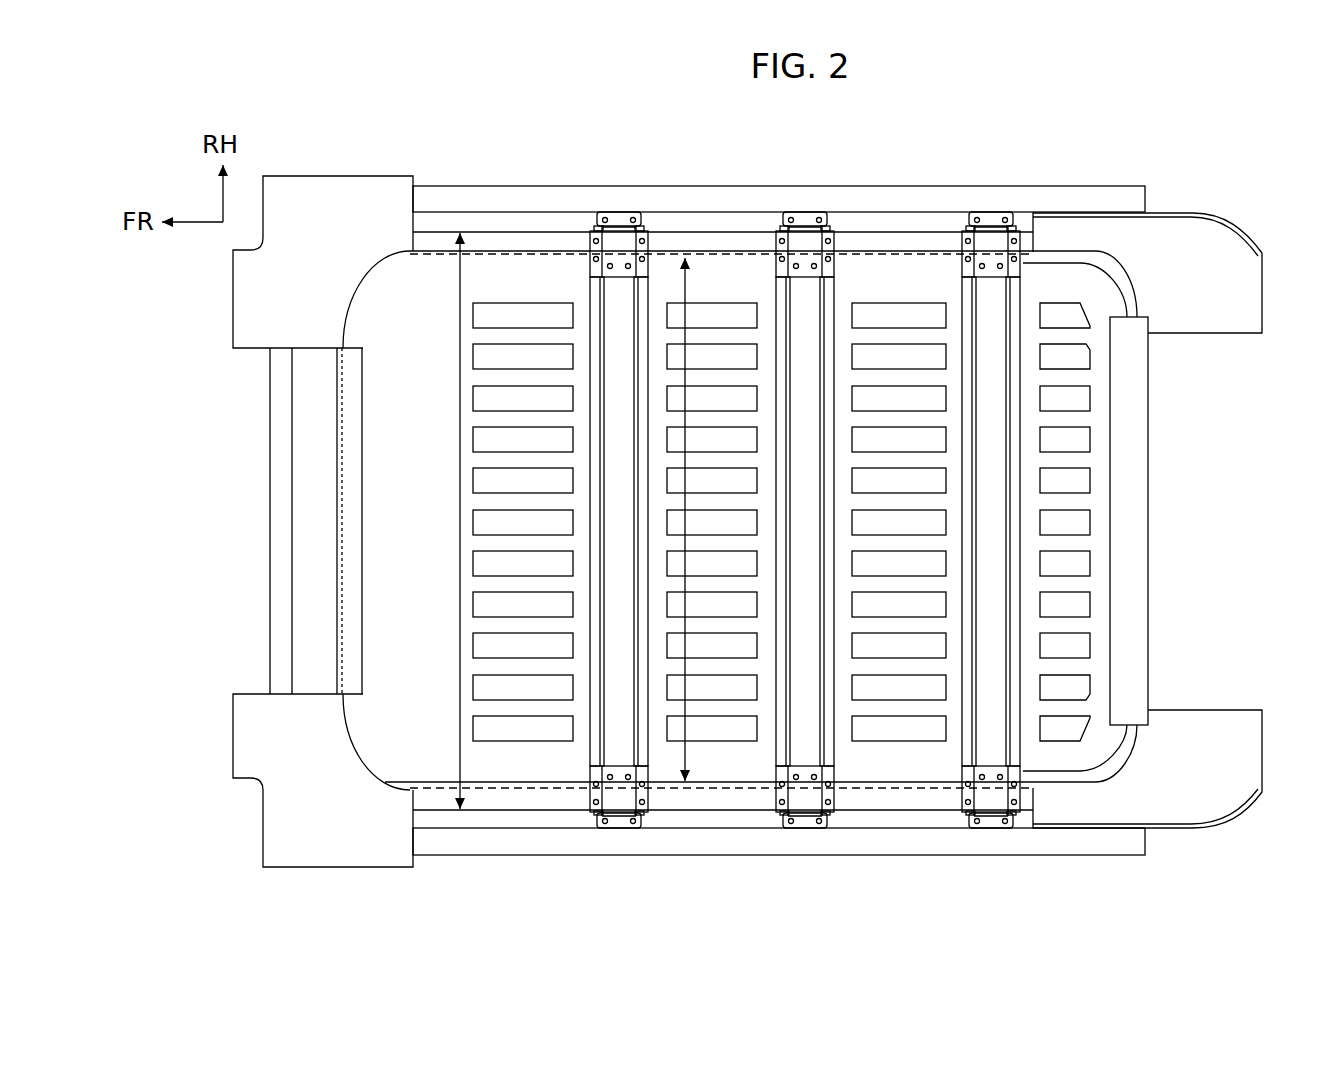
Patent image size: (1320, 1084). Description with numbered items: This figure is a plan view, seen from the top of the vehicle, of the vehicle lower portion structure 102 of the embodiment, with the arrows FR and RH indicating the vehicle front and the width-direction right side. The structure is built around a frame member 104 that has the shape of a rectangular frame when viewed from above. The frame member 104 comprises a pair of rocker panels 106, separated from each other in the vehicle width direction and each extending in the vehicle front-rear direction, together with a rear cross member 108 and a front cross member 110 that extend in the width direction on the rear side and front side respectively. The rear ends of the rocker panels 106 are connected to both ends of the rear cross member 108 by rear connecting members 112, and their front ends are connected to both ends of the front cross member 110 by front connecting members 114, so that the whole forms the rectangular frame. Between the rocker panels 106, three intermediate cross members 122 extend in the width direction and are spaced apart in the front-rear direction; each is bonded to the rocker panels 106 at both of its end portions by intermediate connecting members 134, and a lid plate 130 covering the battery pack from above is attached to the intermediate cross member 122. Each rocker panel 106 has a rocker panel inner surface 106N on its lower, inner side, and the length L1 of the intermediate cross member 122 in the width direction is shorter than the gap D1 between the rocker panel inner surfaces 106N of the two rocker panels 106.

The vehicle lower portion structure 102 is at (1215, 180).
The frame member 104 is at (495, 868).
The rocker panel 106 is at (703, 185).
The rocker panel inner surface 106N is at (545, 238).
The rear cross member 108 is at (1152, 520).
The front cross member 110 is at (268, 562).
The rear connecting member 112 is at (1202, 338).
The front connecting member 114 is at (248, 351).
The intermediate cross member 122 is at (580, 281).
The lid plate 130 is at (441, 753).
The intermediate connecting member 134 is at (593, 221).
The gap between rocker panel inner surfaces D1 is at (458, 296).
The length of intermediate cross member L1 is at (690, 293).